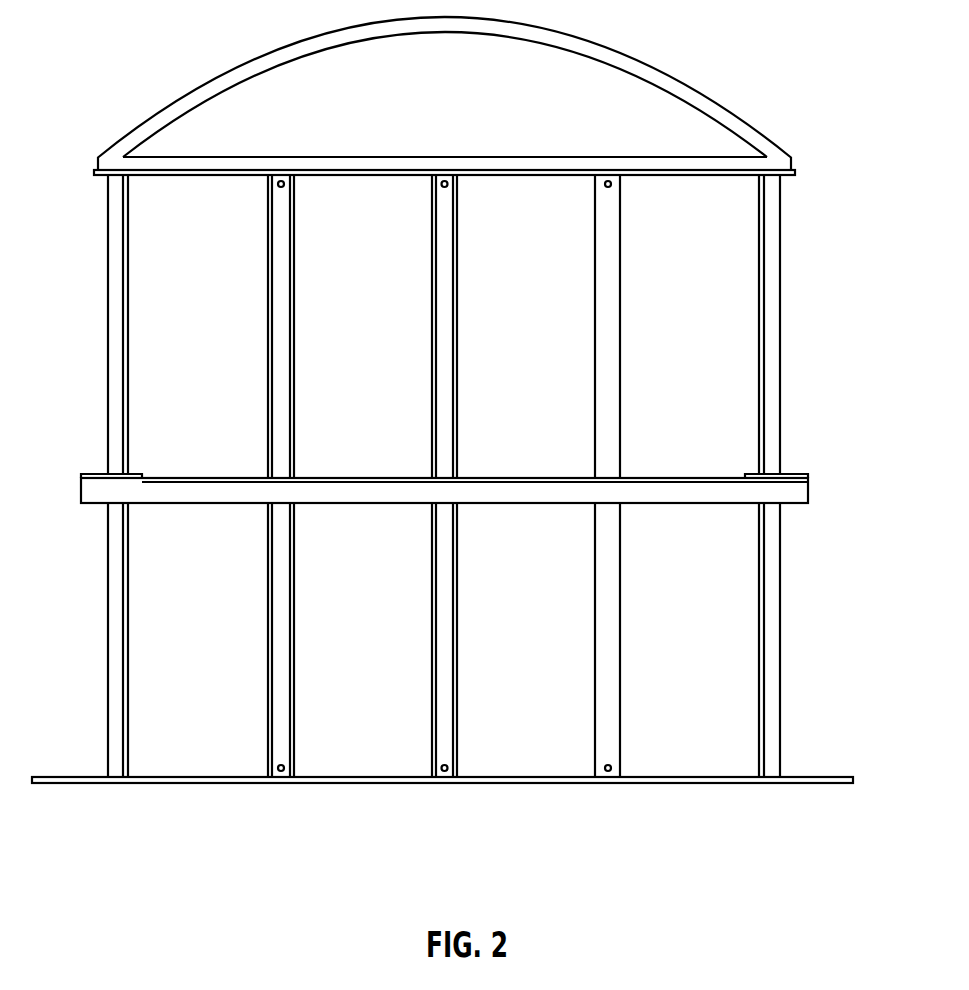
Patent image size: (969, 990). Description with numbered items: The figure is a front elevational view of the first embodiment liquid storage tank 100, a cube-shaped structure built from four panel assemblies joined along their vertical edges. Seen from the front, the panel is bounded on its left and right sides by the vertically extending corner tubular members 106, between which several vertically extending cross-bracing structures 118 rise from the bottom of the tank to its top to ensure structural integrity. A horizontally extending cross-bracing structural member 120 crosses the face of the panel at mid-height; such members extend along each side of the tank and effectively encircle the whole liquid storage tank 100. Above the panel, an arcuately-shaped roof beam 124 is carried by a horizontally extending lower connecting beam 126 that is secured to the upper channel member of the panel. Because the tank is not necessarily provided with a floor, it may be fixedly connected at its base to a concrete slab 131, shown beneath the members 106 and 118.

The liquid storage tank 100 is at (810, 84).
The arcuately-shaped roof beam 124 is at (625, 50).
The horizontally extending lower connecting beam 126 is at (190, 162).
The vertically extending cross-bracing structure 118 is at (610, 378).
The corner tubular member 106 is at (768, 610).
The horizontally extending cross-bracing structural member 120 is at (484, 490).
The concrete slab 131 is at (95, 783).